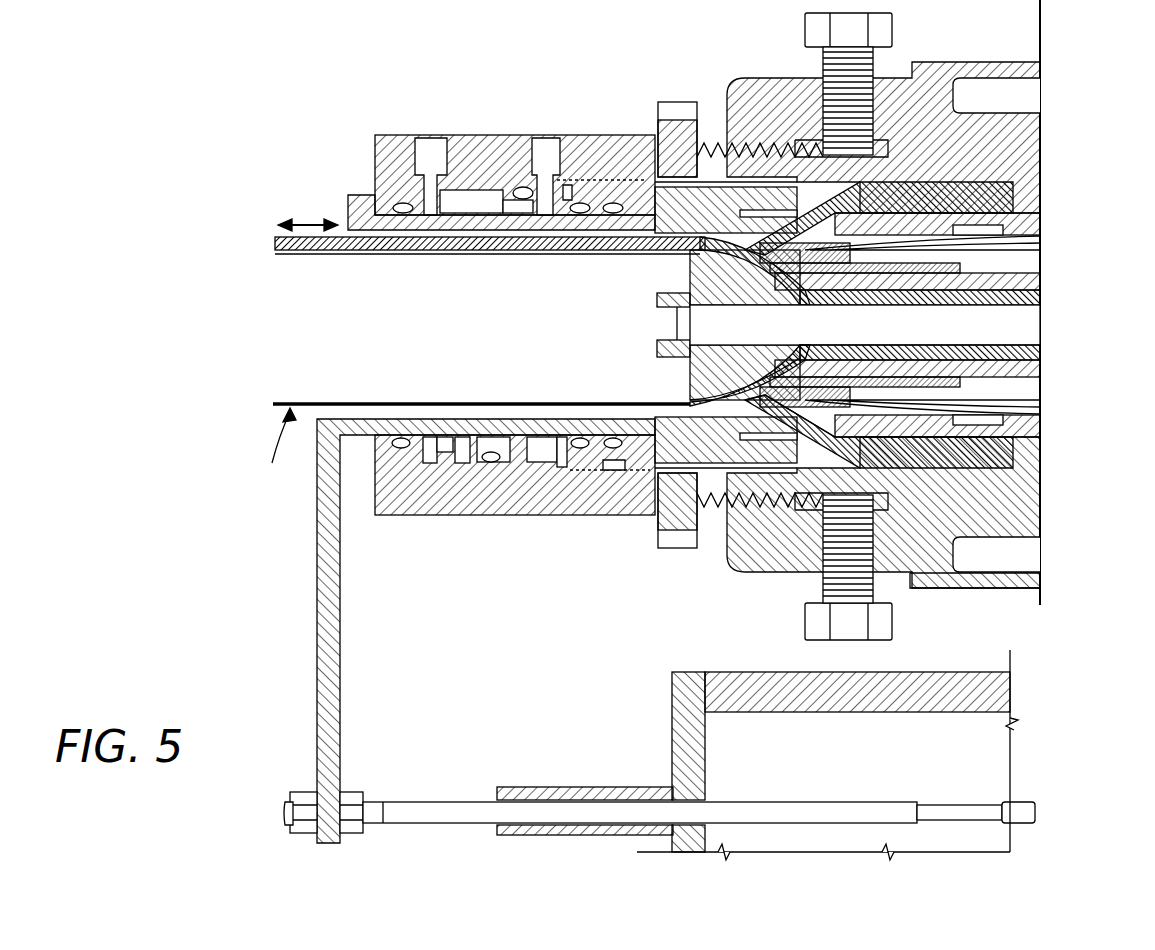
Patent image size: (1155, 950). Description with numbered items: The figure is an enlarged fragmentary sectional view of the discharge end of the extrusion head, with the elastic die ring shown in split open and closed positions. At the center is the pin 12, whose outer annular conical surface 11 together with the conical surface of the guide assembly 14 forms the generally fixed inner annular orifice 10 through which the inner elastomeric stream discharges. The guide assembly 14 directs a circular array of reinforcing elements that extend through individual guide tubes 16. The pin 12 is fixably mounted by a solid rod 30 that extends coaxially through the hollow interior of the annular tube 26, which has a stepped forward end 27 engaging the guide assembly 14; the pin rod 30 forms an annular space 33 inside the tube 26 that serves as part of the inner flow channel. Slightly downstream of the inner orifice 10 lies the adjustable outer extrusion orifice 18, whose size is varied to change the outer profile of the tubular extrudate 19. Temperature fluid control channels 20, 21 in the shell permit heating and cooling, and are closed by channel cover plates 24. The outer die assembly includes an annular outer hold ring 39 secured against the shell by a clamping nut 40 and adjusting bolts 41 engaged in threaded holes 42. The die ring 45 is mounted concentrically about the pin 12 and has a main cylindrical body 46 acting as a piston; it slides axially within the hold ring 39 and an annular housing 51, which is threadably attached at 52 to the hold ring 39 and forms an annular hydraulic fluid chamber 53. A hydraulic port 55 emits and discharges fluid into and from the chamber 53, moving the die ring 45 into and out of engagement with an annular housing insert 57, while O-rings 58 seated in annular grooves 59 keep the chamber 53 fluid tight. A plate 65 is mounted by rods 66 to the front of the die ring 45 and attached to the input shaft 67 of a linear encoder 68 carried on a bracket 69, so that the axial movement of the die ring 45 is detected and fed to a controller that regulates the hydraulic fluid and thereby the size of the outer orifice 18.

The inner annular orifice 10 is at (762, 395).
The outer annular conical surface 11 is at (690, 386).
The pin 12 is at (688, 282).
The guide assembly 14 is at (870, 342).
The guide tubes 16 is at (1042, 245).
The outer extrusion orifice 18 is at (712, 238).
The tubular extrudate 19 is at (258, 453).
The temperature fluid control channel 20 is at (1022, 95).
The temperature fluid control channel 21 is at (1000, 553).
The channel cover plate 24 is at (985, 588).
The annular tube 26 is at (1042, 365).
The stepped forward end 27 is at (688, 268).
The solid rod 30 is at (1000, 330).
The annular space 33 is at (1042, 307).
The outer hold ring 39 is at (797, 440).
The clamping nut 40 is at (658, 525).
The adjusting bolt 41 is at (860, 30).
The threaded hole 42 is at (873, 540).
The die ring 45 is at (360, 418).
The main cylindrical body 46 is at (452, 240).
The annular housing 51 is at (512, 495).
The threaded attachment 52 is at (612, 475).
The hydraulic fluid chamber 53 is at (432, 455).
The hydraulic port 55 is at (433, 150).
The annular housing insert 57 is at (733, 545).
The O-ring 58 is at (520, 190).
The annular groove 59 is at (567, 192).
The plate 65 is at (322, 657).
The rod 66 is at (420, 810).
The input shaft 67 is at (960, 810).
The linear encoder 68 is at (940, 745).
The bracket 69 is at (990, 702).